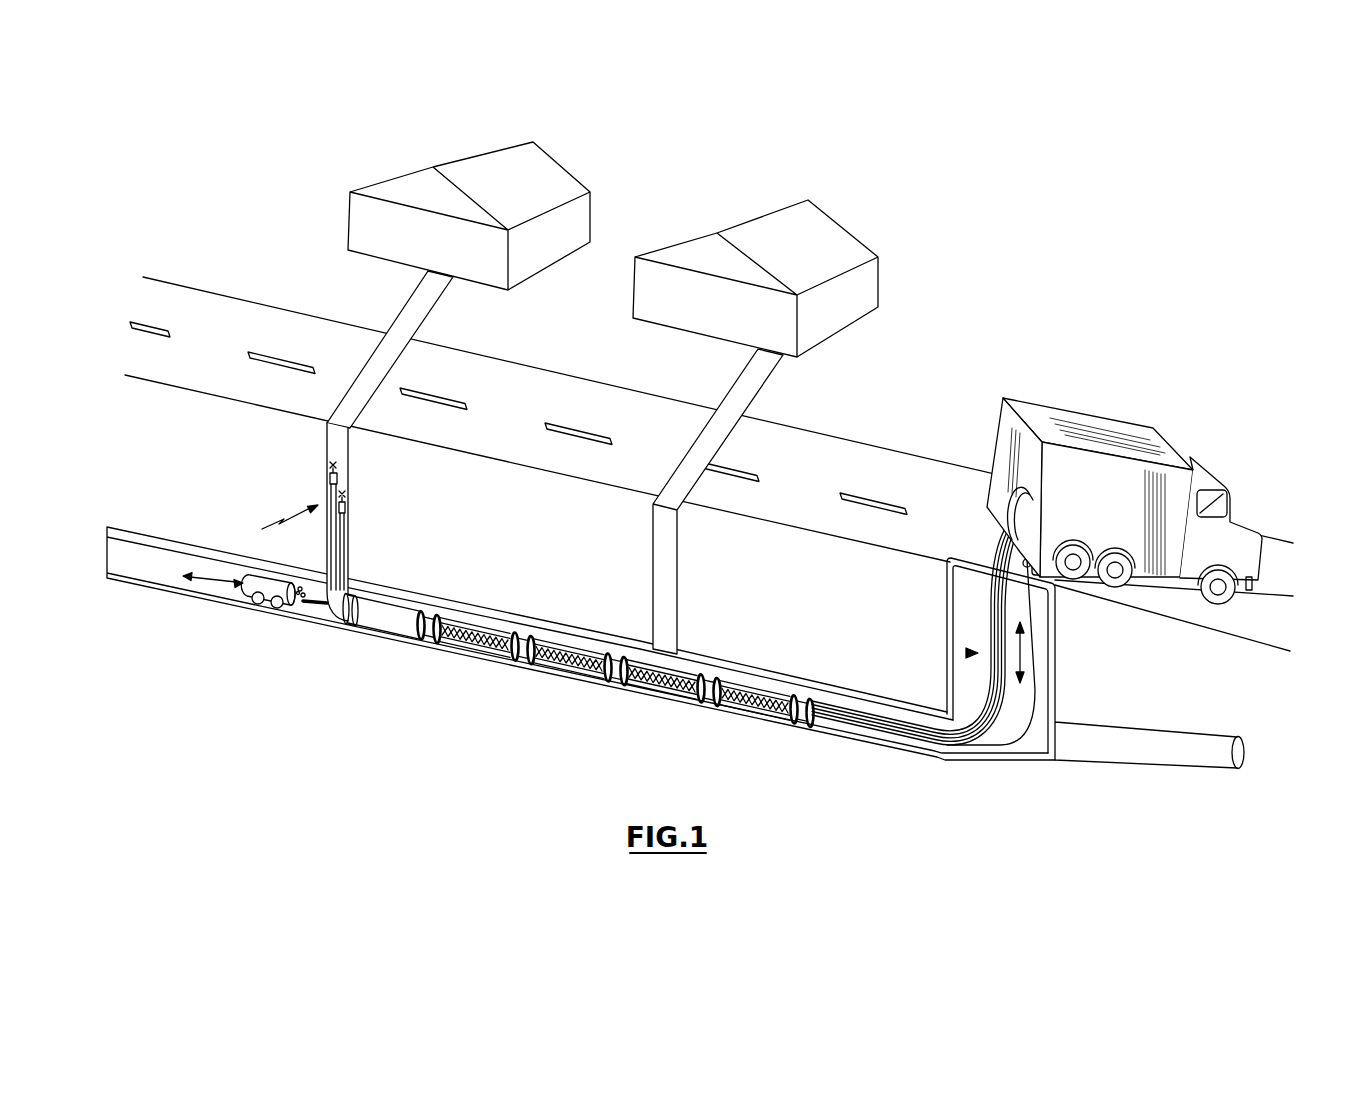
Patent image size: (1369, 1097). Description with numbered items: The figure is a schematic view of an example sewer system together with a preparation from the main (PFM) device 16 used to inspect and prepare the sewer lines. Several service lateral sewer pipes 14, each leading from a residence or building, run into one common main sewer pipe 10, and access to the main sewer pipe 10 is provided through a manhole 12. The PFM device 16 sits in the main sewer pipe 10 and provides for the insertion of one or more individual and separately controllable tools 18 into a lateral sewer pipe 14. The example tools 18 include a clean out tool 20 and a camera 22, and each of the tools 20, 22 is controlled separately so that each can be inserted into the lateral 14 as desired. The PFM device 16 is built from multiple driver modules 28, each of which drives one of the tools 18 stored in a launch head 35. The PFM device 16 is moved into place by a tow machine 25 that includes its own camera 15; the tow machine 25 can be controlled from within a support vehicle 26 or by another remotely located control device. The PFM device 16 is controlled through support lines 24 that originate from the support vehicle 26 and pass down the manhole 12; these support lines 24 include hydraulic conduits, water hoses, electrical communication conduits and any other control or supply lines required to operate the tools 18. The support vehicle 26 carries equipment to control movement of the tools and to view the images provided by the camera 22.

The main sewer pipe 10 is at (930, 757).
The manhole 12 is at (1043, 705).
The service lateral sewer pipe 14 is at (345, 482).
The camera 15 is at (310, 602).
The preparation from the main (PFM) device 16 is at (725, 630).
The tools 18 is at (275, 525).
The clean out tool 20 is at (330, 474).
The camera 22 is at (346, 510).
The support lines 24 is at (964, 653).
The tow machine 25 is at (246, 593).
The support vehicle 26 is at (1172, 562).
The driver modules 28 is at (475, 648).
The launch head 35 is at (385, 623).